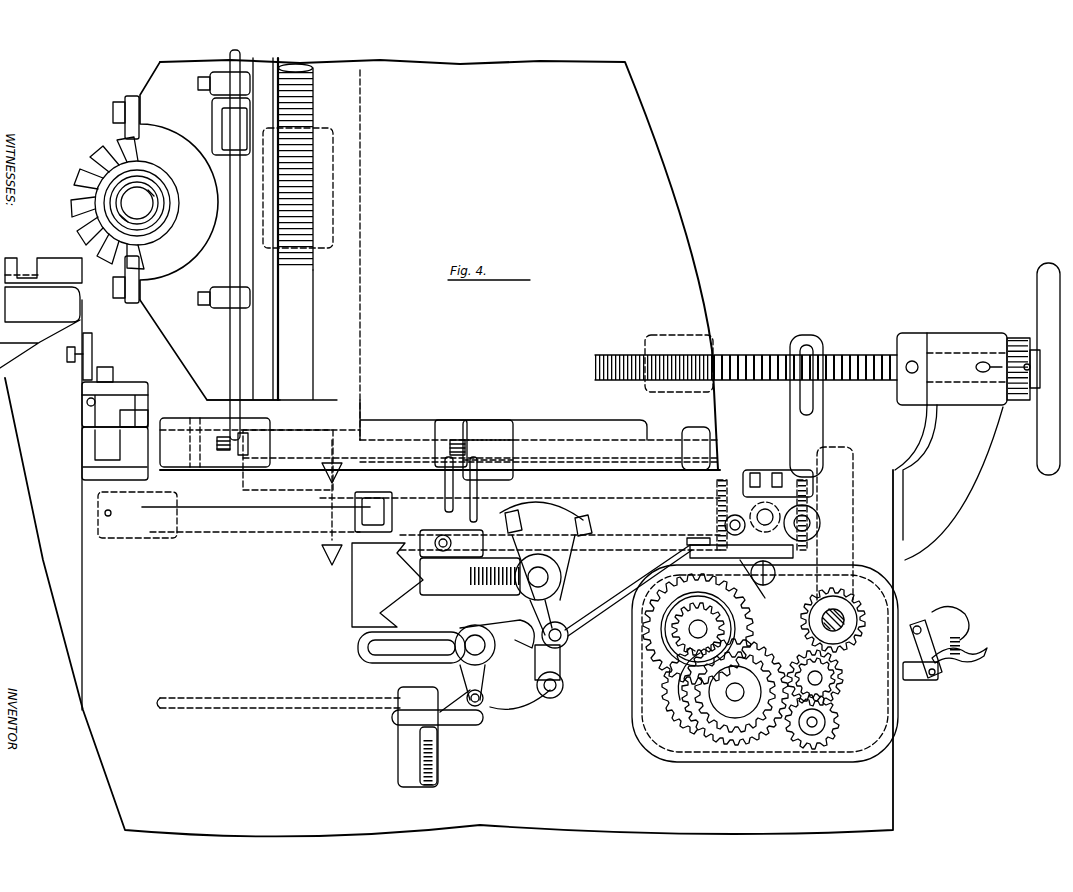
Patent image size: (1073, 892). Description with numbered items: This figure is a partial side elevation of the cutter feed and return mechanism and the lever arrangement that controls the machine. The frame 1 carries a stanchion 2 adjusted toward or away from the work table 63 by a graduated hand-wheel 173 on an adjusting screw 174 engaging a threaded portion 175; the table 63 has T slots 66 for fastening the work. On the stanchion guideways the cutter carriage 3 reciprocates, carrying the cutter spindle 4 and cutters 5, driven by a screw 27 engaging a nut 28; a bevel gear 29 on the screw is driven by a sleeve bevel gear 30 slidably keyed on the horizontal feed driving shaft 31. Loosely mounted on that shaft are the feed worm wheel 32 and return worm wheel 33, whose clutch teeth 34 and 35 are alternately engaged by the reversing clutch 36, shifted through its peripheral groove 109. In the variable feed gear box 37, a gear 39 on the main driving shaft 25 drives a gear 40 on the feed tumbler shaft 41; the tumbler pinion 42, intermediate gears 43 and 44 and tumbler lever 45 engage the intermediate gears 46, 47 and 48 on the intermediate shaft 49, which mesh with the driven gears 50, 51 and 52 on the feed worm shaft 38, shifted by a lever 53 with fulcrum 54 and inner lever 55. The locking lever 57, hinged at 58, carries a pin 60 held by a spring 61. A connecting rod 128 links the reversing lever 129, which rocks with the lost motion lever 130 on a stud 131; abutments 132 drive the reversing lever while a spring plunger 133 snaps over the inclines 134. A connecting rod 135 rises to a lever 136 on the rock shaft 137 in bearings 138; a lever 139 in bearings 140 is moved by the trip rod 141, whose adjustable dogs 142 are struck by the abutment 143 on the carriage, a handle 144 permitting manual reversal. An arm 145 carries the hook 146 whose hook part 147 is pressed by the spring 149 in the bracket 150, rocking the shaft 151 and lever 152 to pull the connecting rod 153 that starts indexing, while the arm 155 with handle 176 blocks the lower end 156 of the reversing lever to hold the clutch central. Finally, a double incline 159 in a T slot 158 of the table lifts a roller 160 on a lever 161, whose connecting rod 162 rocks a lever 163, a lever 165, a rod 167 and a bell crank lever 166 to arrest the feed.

The frame 1 is at (878, 776).
The stanchion 2 is at (686, 216).
The cutter carriage 3 is at (172, 343).
The cutter spindle 4 is at (146, 208).
The cutters 5 is at (88, 168).
The main driving shaft 25 is at (838, 629).
The screw 27 is at (312, 319).
The nut 28 is at (324, 208).
The bevel gear 29 is at (256, 482).
The sleeve bevel gear 30 is at (330, 550).
The horizontal feed driving shaft 31 is at (228, 532).
The feed worm wheel 32 is at (710, 430).
The return worm wheel 33 is at (853, 455).
The clutch teeth 34 is at (725, 480).
The clutch teeth 35 is at (803, 480).
The reversing clutch member 36 is at (752, 472).
The variable feed gear box 37 is at (898, 708).
The feed worm shaft 38 is at (708, 630).
The gear 39 is at (866, 622).
The second gear 40 is at (842, 692).
The feed tumbler shaft 41 is at (823, 680).
The feed tumbler pinion 42 is at (836, 676).
The tumbler intermediate gear 43 is at (838, 728).
The second intermediate gear 44 is at (800, 740).
The tumbler lever 45 is at (918, 627).
The intermediate gear 46 is at (746, 748).
The intermediate gear 47 is at (712, 722).
The intermediate gear 48 is at (712, 704).
The intermediate shaft 49 is at (745, 685).
The driven gear 50 is at (678, 648).
The driven gear 51 is at (685, 662).
The driven gear 52 is at (650, 647).
The lever 53 is at (688, 548).
The fulcrum 54 is at (776, 578).
The lever 55 is at (763, 590).
The locking lever 57 is at (968, 660).
The hinge 58 is at (922, 628).
The pin 60 is at (920, 676).
The spring 61 is at (962, 643).
The work table 63 is at (80, 326).
The T slots 66 is at (30, 262).
The peripheral groove 109 is at (776, 473).
The connecting rod 128 is at (592, 614).
The reversing lever 129 is at (550, 548).
The lost motion lever 130 is at (510, 540).
The stud 131 is at (562, 580).
The abutments 132 is at (534, 500).
The spring plunger 133 is at (450, 583).
The inclines 134 is at (352, 590).
The connecting rod 135 is at (449, 530).
The lever 136 is at (455, 414).
The horizontal rock shaft 137 is at (387, 432).
The bearings 138 is at (486, 421).
The lever 139 is at (223, 460).
The bearings 140 is at (190, 421).
The trip rod 141 is at (233, 354).
The adjustable dogs 142 is at (220, 88).
The abutment 143 is at (214, 124).
The handle 144 is at (454, 510).
The arm 145 is at (563, 680).
The hook 146 is at (510, 712).
The hook part 147 is at (476, 713).
The spring 149 is at (438, 767).
The bracket 150 is at (405, 751).
The rock shaft 151 is at (490, 650).
The lever 152 is at (485, 697).
The connecting rod 153 is at (220, 699).
The arm 155 is at (503, 626).
The lower end 156 is at (552, 648).
The T slot 158 is at (67, 352).
The double incline 159 is at (92, 340).
The roller 160 is at (114, 374).
The lever 161 is at (148, 403).
The connecting rod 162 is at (87, 403).
The rock lever 163 is at (150, 418).
The lever 165 is at (140, 490).
The bell crank lever 166 is at (358, 513).
The rod 167 is at (243, 506).
The graduated hand-wheel 173 is at (1035, 274).
The adjusting screw 174 is at (840, 356).
The threaded portion 175 is at (715, 352).
The handle 176 is at (363, 656).